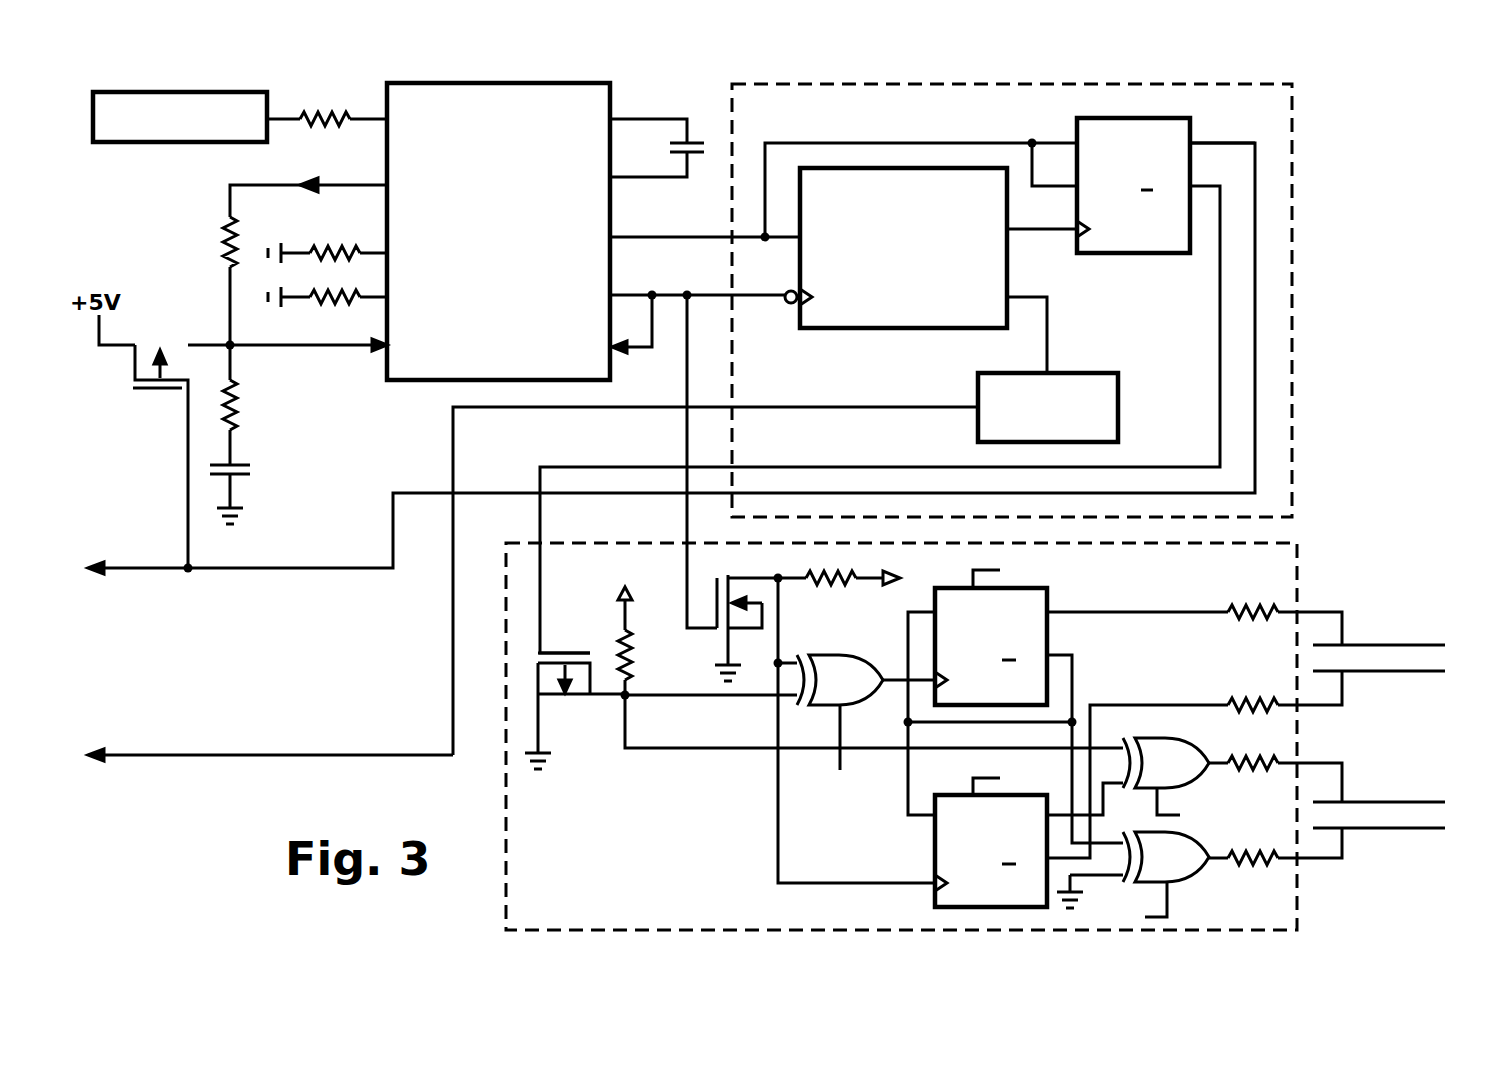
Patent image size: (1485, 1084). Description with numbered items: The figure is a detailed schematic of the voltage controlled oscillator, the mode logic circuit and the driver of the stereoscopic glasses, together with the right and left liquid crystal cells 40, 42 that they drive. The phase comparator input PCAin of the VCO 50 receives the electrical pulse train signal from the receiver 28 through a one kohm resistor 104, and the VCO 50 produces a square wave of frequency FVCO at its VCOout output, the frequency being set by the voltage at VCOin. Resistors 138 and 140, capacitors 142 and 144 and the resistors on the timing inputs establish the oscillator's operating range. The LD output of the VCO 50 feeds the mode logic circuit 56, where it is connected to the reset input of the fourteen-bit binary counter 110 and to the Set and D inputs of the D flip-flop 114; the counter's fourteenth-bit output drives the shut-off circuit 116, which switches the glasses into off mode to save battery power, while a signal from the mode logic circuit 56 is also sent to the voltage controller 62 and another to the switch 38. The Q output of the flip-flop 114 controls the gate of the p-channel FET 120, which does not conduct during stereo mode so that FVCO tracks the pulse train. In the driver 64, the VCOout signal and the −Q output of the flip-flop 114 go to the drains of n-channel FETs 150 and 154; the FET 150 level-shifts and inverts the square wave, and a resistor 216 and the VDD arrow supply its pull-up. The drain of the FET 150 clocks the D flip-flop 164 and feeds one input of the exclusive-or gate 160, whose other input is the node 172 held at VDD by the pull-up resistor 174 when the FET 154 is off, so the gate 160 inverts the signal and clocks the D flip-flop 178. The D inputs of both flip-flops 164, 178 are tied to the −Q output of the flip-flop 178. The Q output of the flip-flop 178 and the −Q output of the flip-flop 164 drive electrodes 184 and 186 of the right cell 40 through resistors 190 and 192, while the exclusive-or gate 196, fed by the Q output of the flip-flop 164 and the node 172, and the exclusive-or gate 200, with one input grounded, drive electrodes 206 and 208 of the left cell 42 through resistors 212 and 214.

The receiver 28 is at (158, 145).
The resistor 104 is at (340, 126).
The resistor 140 is at (222, 253).
The resistor 138 is at (238, 421).
The capacitor 144 is at (243, 463).
The p-channel field effect transistor 120 is at (161, 394).
The voltage controlled oscillator 50 is at (398, 383).
The capacitor 142 is at (698, 140).
The mode logic circuit 56 is at (1298, 130).
The fourteen-bit binary counter 110 is at (898, 330).
The D flip-flop 114 is at (1108, 255).
The shut-off circuit 116 is at (1118, 421).
The driver 64 is at (1298, 573).
The n-channel field effect transistor 154 is at (598, 650).
The node 172 is at (622, 700).
The pull-up resistor 174 is at (631, 683).
The n-channel field effect transistor 150 is at (715, 612).
The resistor 216 is at (842, 592).
The exclusive-or gate 160 is at (822, 707).
The D flip-flop 178 is at (1050, 598).
The resistor 190 is at (1246, 606).
The resistor 192 is at (1246, 698).
The exclusive-or gate 196 is at (1153, 740).
The resistor 212 is at (1272, 752).
The resistor 214 is at (1272, 862).
The exclusive-or gate 200 is at (1200, 874).
The D flip-flop 164 is at (933, 855).
The electrode 184 is at (1413, 644).
The electrode 186 is at (1415, 673).
The electrode 206 is at (1412, 800).
The electrode 208 is at (1416, 830).
The right liquid crystal cell 40 is at (1361, 643).
The left liquid crystal cell 42 is at (1361, 841).
The voltage controller 62 is at (663, 401).
The switch 38 is at (526, 613).